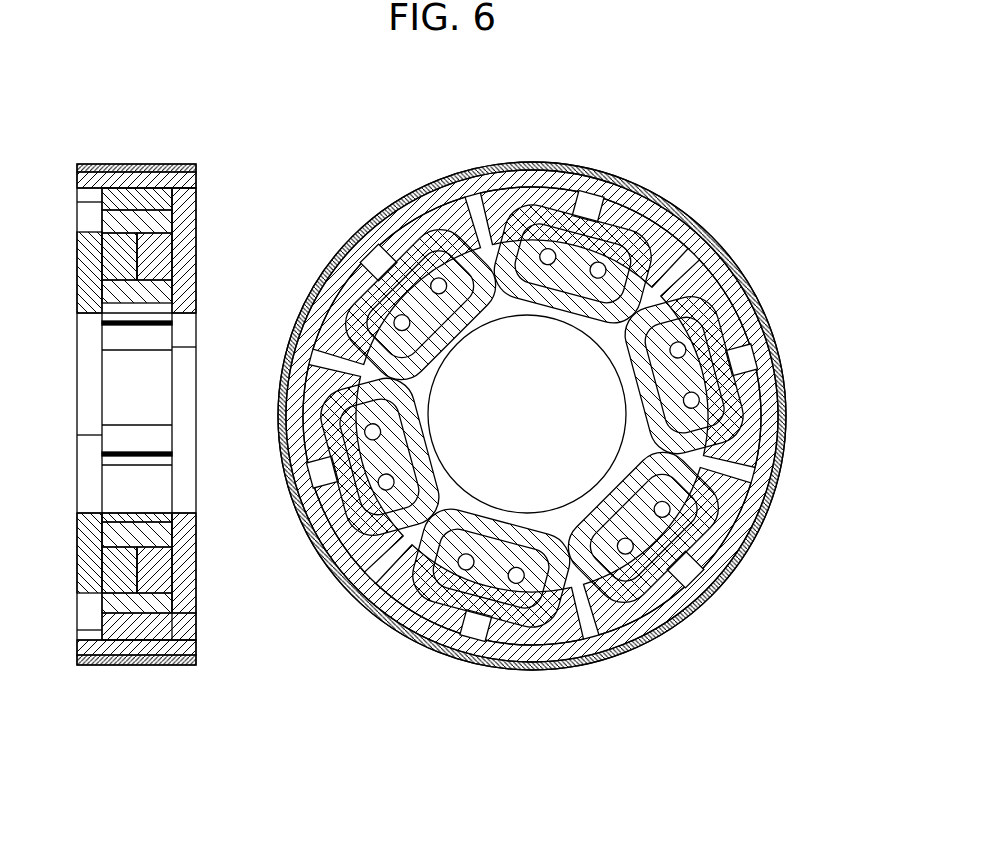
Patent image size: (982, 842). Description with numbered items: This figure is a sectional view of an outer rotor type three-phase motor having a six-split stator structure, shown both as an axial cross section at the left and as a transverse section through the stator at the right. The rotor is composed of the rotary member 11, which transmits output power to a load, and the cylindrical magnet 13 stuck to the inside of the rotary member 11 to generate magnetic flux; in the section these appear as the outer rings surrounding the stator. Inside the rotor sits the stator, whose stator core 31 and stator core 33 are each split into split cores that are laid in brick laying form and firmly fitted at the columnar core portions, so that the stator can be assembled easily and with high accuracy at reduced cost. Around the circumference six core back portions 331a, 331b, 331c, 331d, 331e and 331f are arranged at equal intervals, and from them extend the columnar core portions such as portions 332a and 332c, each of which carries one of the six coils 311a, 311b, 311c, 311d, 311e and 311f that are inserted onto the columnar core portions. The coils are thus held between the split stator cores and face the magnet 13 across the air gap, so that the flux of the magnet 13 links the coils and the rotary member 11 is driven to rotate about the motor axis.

The rotary member 11 is at (196, 166).
The magnet 13 is at (196, 648).
The stator core 31 is at (406, 413).
The stator core 33 is at (190, 291).
The coil 311a is at (353, 283).
The coil 311b is at (766, 320).
The coil 311c is at (578, 661).
The coil 311d is at (567, 178).
The coil 311e is at (762, 525).
The coil 311f is at (323, 515).
The core back segment 331a is at (782, 452).
The core back segment 331b is at (400, 196).
The core back segment 331c is at (393, 618).
The core back segment 331d is at (696, 210).
The core back segment 331e is at (292, 407).
The core back segment 331f is at (702, 610).
The tooth 332a is at (743, 553).
The tooth 332c is at (550, 671).